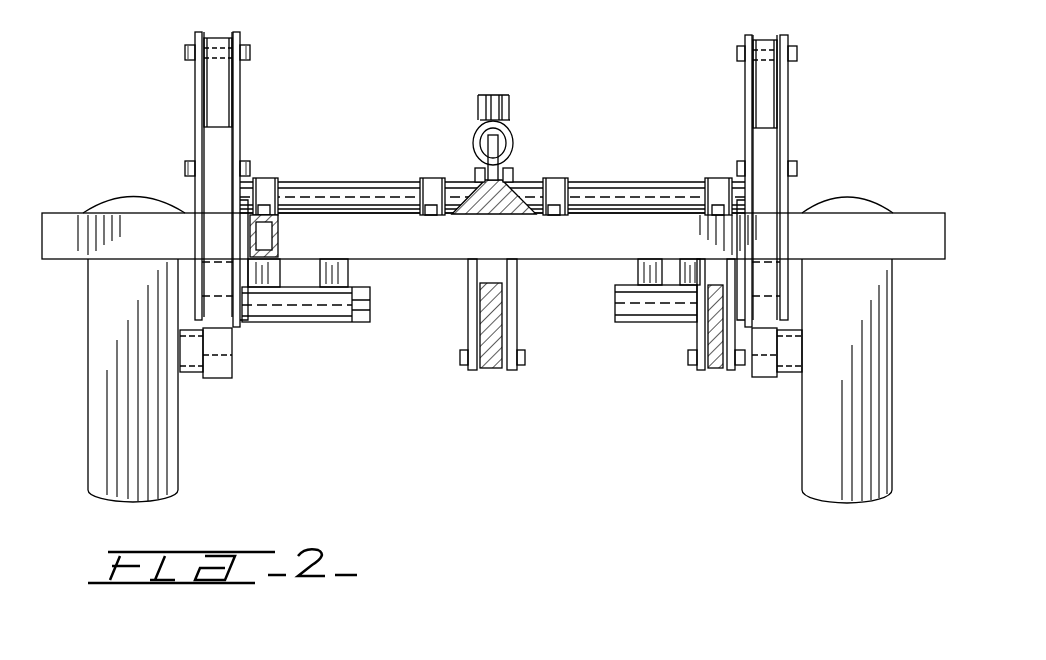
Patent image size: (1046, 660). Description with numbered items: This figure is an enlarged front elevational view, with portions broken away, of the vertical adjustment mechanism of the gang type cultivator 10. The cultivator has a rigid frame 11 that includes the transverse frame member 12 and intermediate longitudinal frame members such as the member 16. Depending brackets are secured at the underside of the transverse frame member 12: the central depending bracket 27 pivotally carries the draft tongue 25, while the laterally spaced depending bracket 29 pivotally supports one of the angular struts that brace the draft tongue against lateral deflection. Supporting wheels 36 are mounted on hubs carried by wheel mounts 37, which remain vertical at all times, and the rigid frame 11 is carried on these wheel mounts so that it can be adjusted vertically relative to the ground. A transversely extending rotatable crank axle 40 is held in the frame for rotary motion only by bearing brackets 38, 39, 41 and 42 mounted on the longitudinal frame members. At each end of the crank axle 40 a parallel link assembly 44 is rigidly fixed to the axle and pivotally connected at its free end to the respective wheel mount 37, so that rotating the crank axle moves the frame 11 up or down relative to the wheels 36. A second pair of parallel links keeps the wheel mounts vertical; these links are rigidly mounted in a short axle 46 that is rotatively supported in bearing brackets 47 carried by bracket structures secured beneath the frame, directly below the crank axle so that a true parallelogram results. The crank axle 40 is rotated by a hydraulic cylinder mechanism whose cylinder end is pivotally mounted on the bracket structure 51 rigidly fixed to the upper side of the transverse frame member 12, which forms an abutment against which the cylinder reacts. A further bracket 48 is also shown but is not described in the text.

The gang type cultivator 10 is at (155, 188).
The rigid frame 11 is at (920, 213).
The transverse frame member 12 is at (548, 259).
The intermediate longitudinal frame member 16 is at (265, 238).
The draft tongue 25 is at (480, 325).
The central depending bracket 27 is at (470, 275).
The depending bracket 29 is at (700, 325).
The supporting wheel 36 is at (172, 489).
The wheel mount 37 is at (214, 82).
The bearing bracket 38 is at (268, 190).
The bearing bracket 39 is at (436, 187).
The crank axle 40 is at (640, 195).
The bearing bracket 41 is at (562, 190).
The bearing bracket 42 is at (720, 190).
The parallel link assembly 44 is at (195, 86).
The short axle 46 is at (358, 322).
The bearing bracket 47 is at (290, 310).
The bracket 48 is at (348, 268).
The bracket structure 51 is at (485, 205).